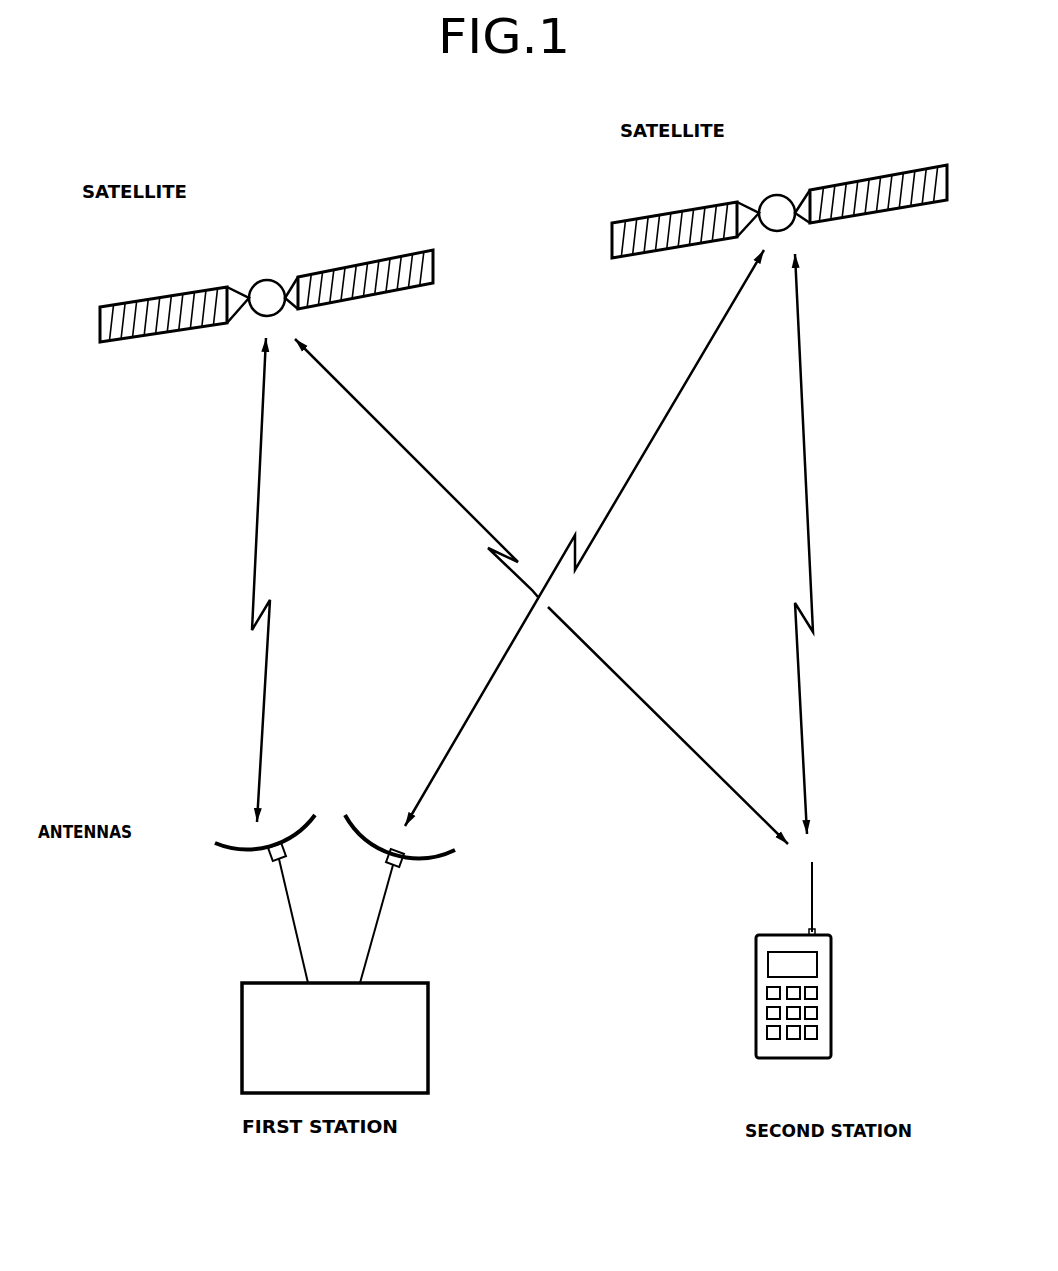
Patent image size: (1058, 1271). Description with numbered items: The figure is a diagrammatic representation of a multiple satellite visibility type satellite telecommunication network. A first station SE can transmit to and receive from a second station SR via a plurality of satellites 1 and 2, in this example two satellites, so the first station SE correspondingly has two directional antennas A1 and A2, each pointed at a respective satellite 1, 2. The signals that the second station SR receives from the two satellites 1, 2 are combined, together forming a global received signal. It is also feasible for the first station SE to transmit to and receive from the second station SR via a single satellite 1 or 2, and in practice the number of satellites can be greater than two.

The satellite 1 is at (267, 256).
The satellite 2 is at (777, 172).
The directional antenna A1 is at (221, 842).
The directional antenna A2 is at (448, 843).
The first station SE is at (422, 1040).
The second station SR is at (757, 1000).